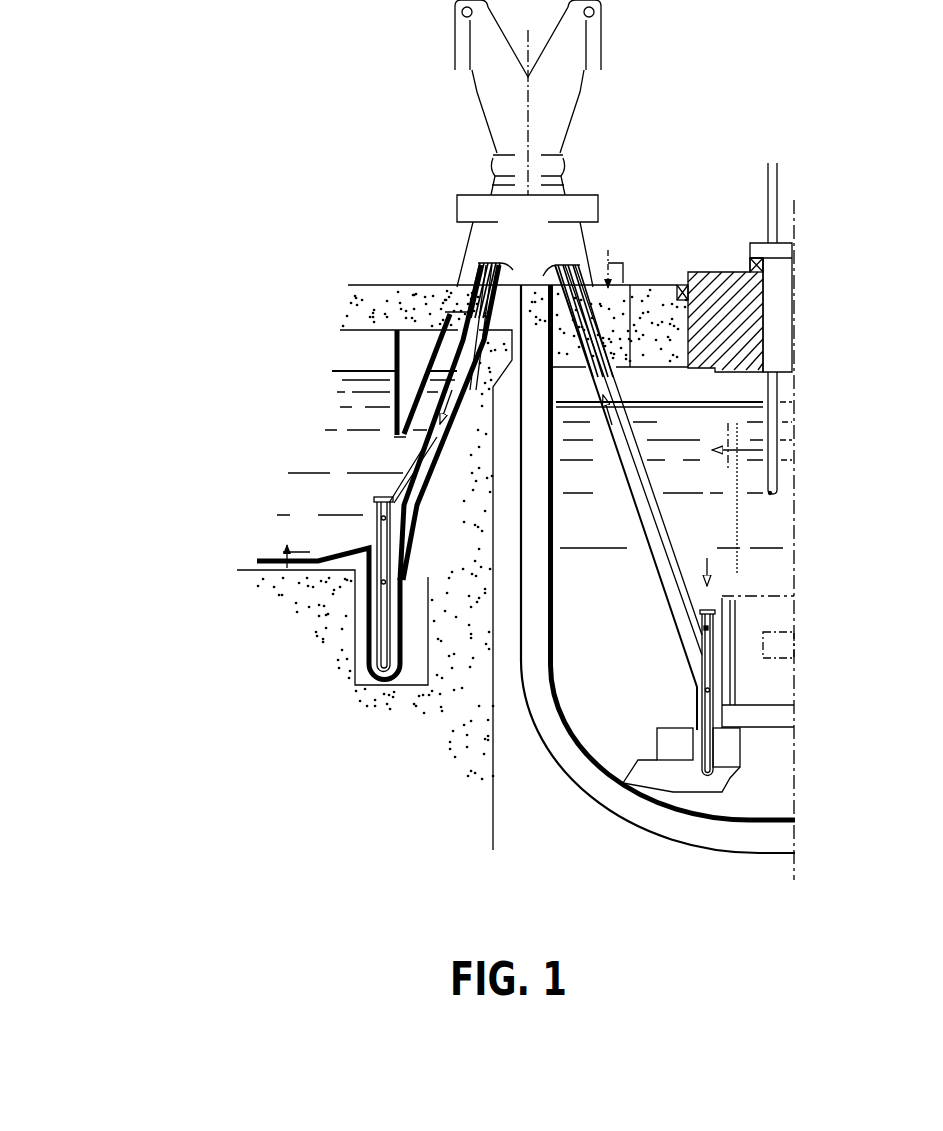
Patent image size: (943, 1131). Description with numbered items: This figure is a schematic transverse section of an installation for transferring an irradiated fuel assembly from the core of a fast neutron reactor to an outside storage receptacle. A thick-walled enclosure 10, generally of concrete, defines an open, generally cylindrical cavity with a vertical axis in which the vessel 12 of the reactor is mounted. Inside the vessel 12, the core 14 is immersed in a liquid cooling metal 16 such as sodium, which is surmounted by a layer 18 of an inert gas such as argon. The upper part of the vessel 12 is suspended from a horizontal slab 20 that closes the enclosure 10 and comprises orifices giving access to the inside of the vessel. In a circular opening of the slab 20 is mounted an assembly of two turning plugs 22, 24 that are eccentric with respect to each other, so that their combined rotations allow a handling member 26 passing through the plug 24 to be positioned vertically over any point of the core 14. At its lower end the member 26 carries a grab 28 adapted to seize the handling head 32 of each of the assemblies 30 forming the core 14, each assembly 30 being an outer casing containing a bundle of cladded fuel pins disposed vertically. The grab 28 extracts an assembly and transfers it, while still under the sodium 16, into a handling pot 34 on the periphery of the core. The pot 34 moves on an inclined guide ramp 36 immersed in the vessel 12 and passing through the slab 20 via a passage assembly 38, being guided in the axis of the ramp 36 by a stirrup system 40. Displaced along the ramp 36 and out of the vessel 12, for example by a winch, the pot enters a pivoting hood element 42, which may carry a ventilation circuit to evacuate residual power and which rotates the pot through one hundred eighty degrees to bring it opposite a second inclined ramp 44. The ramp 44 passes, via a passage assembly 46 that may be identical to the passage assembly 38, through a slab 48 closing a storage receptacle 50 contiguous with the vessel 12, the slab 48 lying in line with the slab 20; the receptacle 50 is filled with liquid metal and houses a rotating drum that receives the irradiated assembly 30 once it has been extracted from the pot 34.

The thick-walled enclosure 10 is at (356, 613).
The vessel 12 is at (553, 645).
The core 14 is at (780, 607).
The liquid cooling metal 16 is at (669, 475).
The layer of inert gas 18 is at (718, 413).
The horizontal slab 20 is at (660, 297).
The turning plug 22 is at (730, 305).
The turning plug 24 is at (775, 283).
The handling member 26 is at (772, 168).
The grab 28 is at (770, 493).
The assembly 30 is at (735, 678).
The handling head 32 is at (733, 470).
The handling pot 34 is at (384, 648).
The inclined guide ramp 36 is at (648, 600).
The passage assembly 38 is at (600, 315).
The stirrup system 40 is at (700, 600).
The pivoting hood element 42 is at (487, 125).
The second inclined ramp 44 is at (438, 462).
The passage assembly 46 is at (437, 310).
The slab 48 is at (366, 292).
The storage receptacle 50 is at (287, 572).